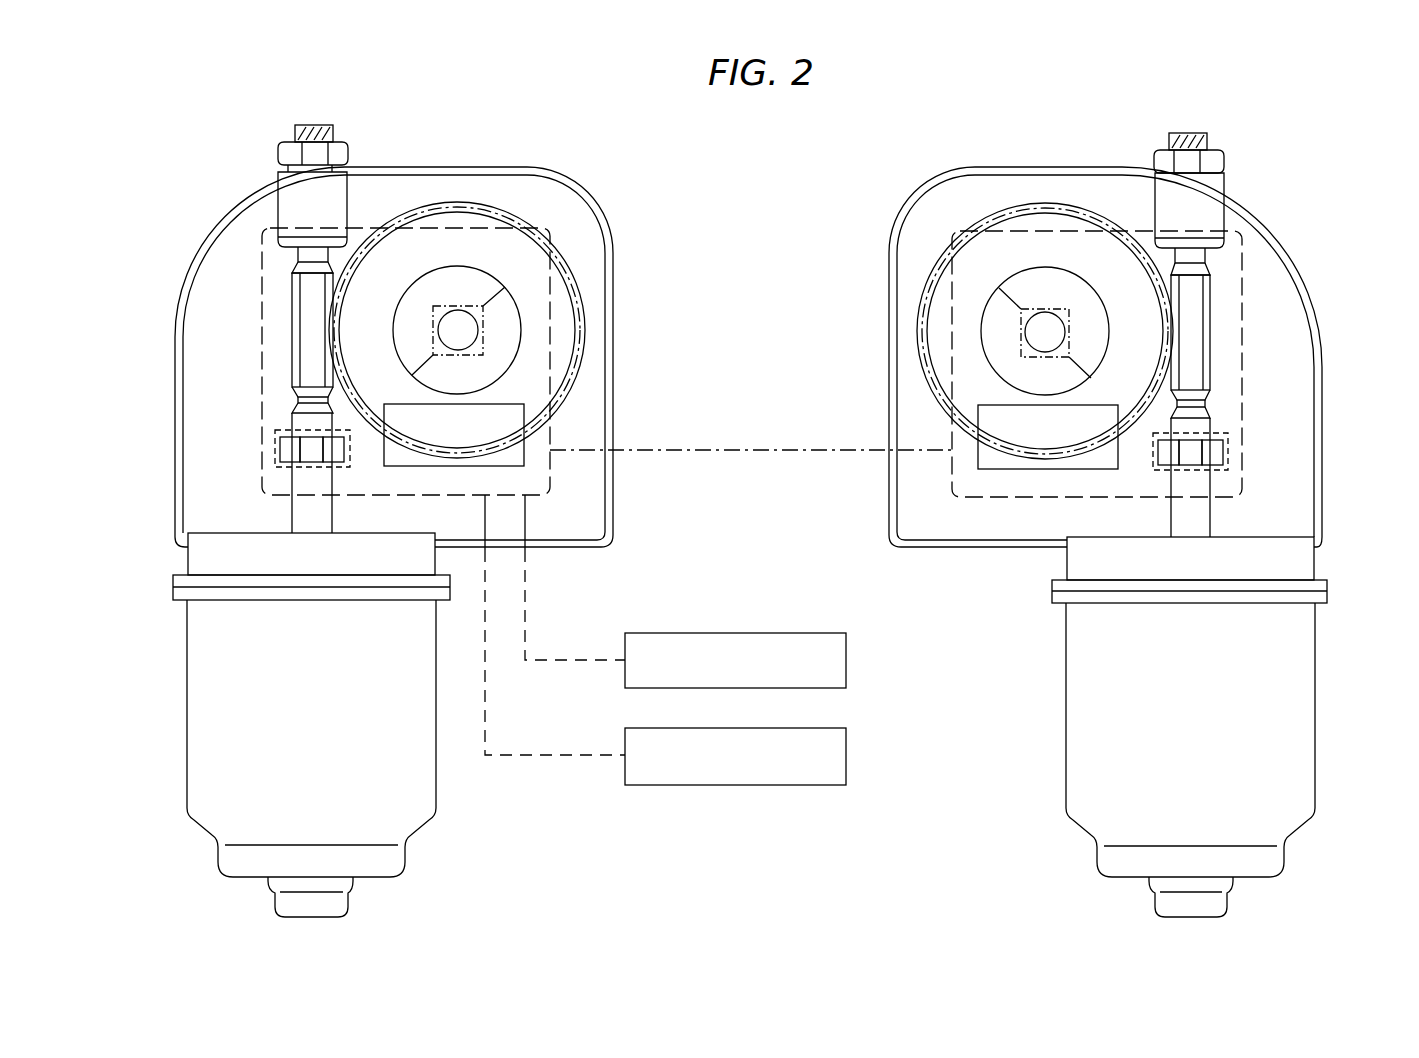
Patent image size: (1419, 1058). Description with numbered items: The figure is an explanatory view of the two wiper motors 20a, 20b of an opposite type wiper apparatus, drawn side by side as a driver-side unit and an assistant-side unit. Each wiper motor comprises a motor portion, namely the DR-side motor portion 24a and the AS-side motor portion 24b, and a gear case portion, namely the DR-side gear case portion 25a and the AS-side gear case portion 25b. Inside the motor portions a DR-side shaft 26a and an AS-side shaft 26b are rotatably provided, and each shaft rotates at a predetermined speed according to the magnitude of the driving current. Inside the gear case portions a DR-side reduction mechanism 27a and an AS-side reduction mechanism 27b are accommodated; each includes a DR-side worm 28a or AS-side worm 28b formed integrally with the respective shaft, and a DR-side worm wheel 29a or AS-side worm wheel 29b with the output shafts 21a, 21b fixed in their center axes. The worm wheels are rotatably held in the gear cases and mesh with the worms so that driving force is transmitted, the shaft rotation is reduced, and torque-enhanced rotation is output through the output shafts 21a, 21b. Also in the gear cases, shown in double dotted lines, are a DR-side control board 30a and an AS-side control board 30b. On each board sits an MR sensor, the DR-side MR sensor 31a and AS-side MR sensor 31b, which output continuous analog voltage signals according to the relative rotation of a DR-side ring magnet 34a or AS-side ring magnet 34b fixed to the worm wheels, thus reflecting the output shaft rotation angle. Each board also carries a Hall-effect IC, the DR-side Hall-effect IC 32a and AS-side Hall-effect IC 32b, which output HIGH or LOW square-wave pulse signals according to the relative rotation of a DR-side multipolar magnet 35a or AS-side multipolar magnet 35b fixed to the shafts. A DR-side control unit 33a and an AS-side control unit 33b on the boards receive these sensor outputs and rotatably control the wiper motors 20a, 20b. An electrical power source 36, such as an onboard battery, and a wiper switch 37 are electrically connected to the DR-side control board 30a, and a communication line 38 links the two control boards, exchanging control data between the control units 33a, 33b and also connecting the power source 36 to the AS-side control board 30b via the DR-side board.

The wiper motor 20a is at (198, 232).
The wiper motor 20b is at (1306, 236).
The output shaft 21a is at (465, 327).
The output shaft 21b is at (1037, 329).
The DR-side motor portion 24a is at (203, 710).
The AS-side motor portion 24b is at (1299, 710).
The DR-side gear case portion 25a is at (208, 337).
The AS-side gear case portion 25b is at (1294, 337).
The DR-side shaft 26a is at (313, 512).
The AS-side shaft 26b is at (1189, 512).
The DR-side reduction mechanism 27a is at (447, 192).
The AS-side reduction mechanism 27b is at (1055, 192).
The DR-side worm 28a is at (312, 300).
The AS-side worm 28b is at (1190, 300).
The DR-side worm wheel 29a is at (465, 245).
The AS-side worm wheel 29b is at (1037, 245).
The DR-side control board 30a is at (273, 252).
The AS-side control board 30b is at (1229, 252).
The DR-side MR sensor 31a is at (470, 307).
The AS-side MR sensor 31b is at (1032, 309).
The DR-side Hall-effect IC 32a is at (262, 432).
The AS-side Hall-effect IC 32b is at (1242, 432).
The DR-side control unit 33a is at (533, 410).
The AS-side control unit 33b is at (969, 410).
The DR-side ring magnet 34a is at (507, 342).
The AS-side ring magnet 34b is at (995, 342).
The DR-side multipolar magnet 35a is at (303, 470).
The AS-side multipolar magnet 35b is at (1199, 472).
The electrical power source 36 is at (848, 660).
The wiper switch 37 is at (848, 757).
The communication line 38 is at (748, 452).